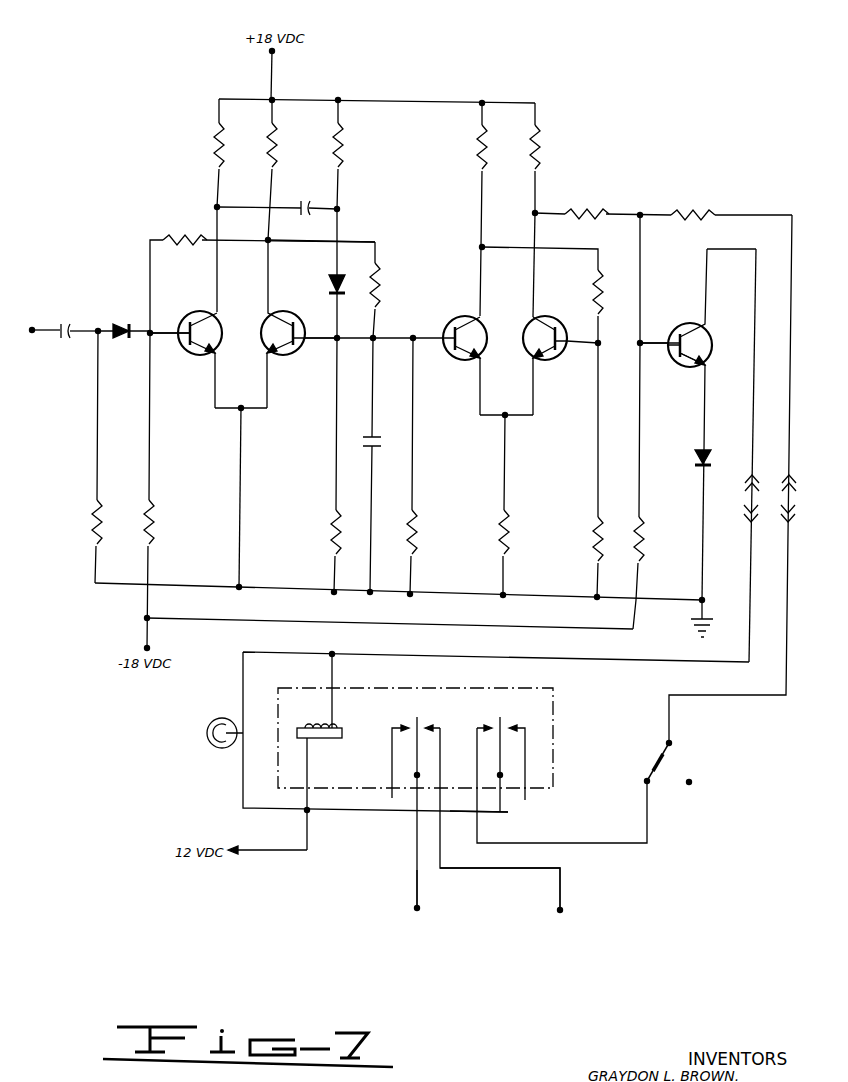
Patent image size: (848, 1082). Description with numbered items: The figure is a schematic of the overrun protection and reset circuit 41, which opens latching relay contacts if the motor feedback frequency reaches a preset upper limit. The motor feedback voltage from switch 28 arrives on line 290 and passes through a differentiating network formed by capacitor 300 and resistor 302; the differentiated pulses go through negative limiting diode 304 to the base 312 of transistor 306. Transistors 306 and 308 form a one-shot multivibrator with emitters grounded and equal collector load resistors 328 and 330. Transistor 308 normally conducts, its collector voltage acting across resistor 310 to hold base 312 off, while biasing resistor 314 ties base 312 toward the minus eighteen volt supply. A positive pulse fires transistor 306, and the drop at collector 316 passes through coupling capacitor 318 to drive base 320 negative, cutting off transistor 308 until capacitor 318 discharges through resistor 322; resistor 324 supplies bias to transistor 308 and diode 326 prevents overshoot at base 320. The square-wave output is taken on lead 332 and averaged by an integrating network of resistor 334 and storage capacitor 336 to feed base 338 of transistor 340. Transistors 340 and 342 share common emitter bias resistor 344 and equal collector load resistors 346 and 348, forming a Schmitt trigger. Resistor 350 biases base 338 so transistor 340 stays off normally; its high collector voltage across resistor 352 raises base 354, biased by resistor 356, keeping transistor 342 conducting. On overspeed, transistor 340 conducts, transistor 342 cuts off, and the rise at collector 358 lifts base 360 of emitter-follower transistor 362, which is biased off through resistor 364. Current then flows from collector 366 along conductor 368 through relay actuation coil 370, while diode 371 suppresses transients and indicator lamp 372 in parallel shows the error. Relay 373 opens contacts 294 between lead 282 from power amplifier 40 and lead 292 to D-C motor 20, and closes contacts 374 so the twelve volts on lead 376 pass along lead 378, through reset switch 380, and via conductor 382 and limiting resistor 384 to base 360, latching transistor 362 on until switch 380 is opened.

The switch 28 is at (60, 275).
The line 290 is at (56, 333).
The capacitor 300 is at (67, 348).
The negative limiting diode 304 is at (119, 337).
The resistor 302 is at (104, 522).
The biasing resistor 314 is at (158, 522).
The transistor 306 is at (204, 368).
The base 312 is at (179, 342).
The transistor 308 is at (281, 367).
The base 320 is at (320, 344).
The resistor 310 is at (183, 232).
The collector 316 is at (219, 267).
The coupling capacitor 318 is at (313, 182).
The resistor 322 is at (344, 151).
The resistor 328 is at (224, 151).
The resistor 330 is at (277, 151).
The lead 332 is at (322, 245).
The diode 326 is at (327, 284).
The resistor 334 is at (380, 291).
The resistor 324 is at (330, 519).
The storage capacitor 336 is at (362, 446).
The base 338 is at (434, 336).
The overrun protection and reset circuit 41 is at (292, 483).
The transistor 340 is at (462, 364).
The transistor 342 is at (538, 364).
The common emitter bias resistor 344 is at (514, 547).
The collector load resistor 346 is at (488, 153).
The collector load resistor 348 is at (542, 153).
The resistor 350 is at (416, 538).
The resistor 352 is at (594, 286).
The base 354 is at (576, 358).
The resistor 356 is at (588, 524).
The collector 358 is at (533, 284).
The base 360 is at (669, 346).
The transistor 362 is at (691, 374).
The resistor 364 is at (641, 528).
The collector 366 is at (702, 322).
The conductor 368 is at (752, 414).
The diode 371 is at (694, 457).
The conductor 382 is at (789, 415).
The limiting resistor 384 is at (684, 210).
The indicator lamp 372 is at (208, 724).
The relay actuation coil 370 is at (338, 728).
The relay 373 is at (400, 688).
The relay contacts 374 is at (488, 728).
The latching relay contacts 294 is at (422, 726).
The lead 376 is at (497, 820).
The lead 378 is at (610, 843).
The reset switch 380 is at (660, 755).
The lead 292 is at (538, 870).
The lead 282 is at (415, 872).
The power amplifier 40 is at (415, 945).
The D-C motor 20 is at (560, 939).